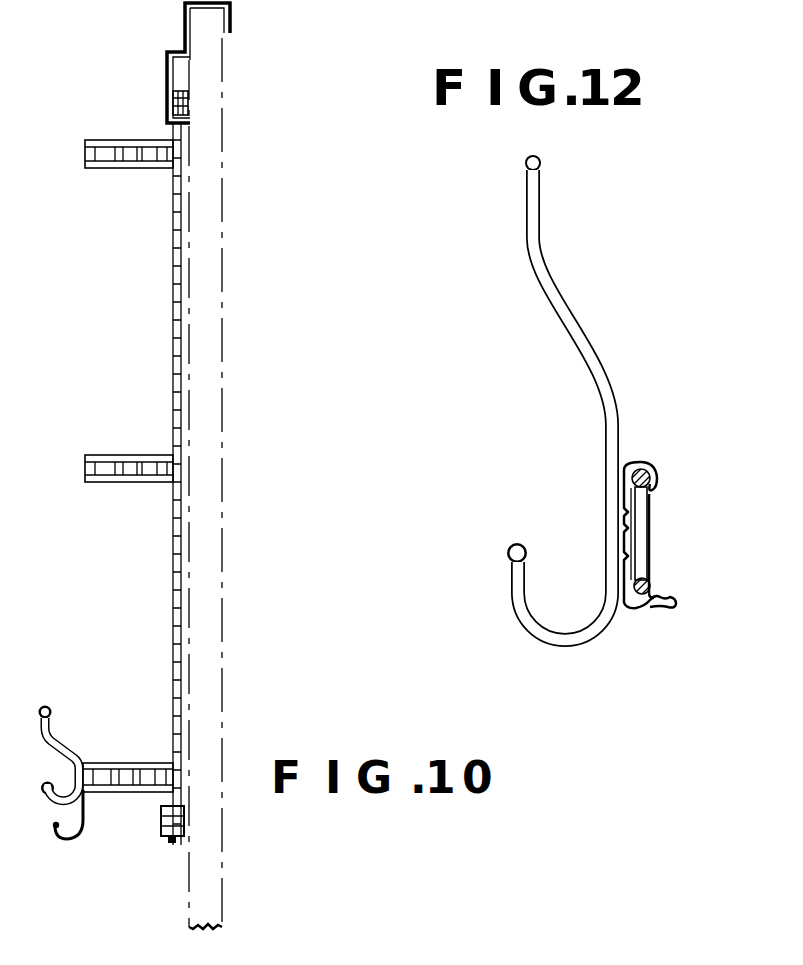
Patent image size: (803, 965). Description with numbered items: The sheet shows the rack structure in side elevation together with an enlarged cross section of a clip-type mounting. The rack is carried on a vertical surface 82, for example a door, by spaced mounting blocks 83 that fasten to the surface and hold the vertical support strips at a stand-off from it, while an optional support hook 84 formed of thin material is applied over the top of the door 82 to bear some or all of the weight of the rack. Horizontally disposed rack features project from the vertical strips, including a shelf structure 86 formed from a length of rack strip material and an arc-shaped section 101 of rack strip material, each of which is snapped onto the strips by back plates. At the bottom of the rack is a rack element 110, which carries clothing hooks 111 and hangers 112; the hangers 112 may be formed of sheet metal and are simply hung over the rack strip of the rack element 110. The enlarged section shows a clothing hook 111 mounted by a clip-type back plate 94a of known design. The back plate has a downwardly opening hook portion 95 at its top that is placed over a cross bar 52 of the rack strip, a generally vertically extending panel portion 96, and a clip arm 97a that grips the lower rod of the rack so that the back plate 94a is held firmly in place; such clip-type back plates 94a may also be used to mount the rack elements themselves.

In FIG. 10, the vertical surface 82 is at (212, 63).
In FIG. 10, the support hook 84 is at (184, 28).
In FIG. 10, the mounting block 83 is at (180, 103).
In FIG. 10, the arc-shaped section of rack strip material 101 is at (133, 172).
In FIG. 10, the shelf structure 86 is at (117, 447).
In FIG. 10, the clothing hook 111 is at (70, 740).
In FIG. 12, the clothing hook 111 is at (560, 322).
In FIG. 10, the hanger 112 is at (84, 826).
In FIG. 12, the rack element 110 is at (666, 498).
In FIG. 12, the clip-type back plate 94a is at (626, 500).
In FIG. 12, the hook portion 95 is at (647, 464).
In FIG. 12, the cross bar 52 is at (639, 531).
In FIG. 12, the panel portion 96 is at (630, 553).
In FIG. 12, the clip arm 97a is at (656, 603).